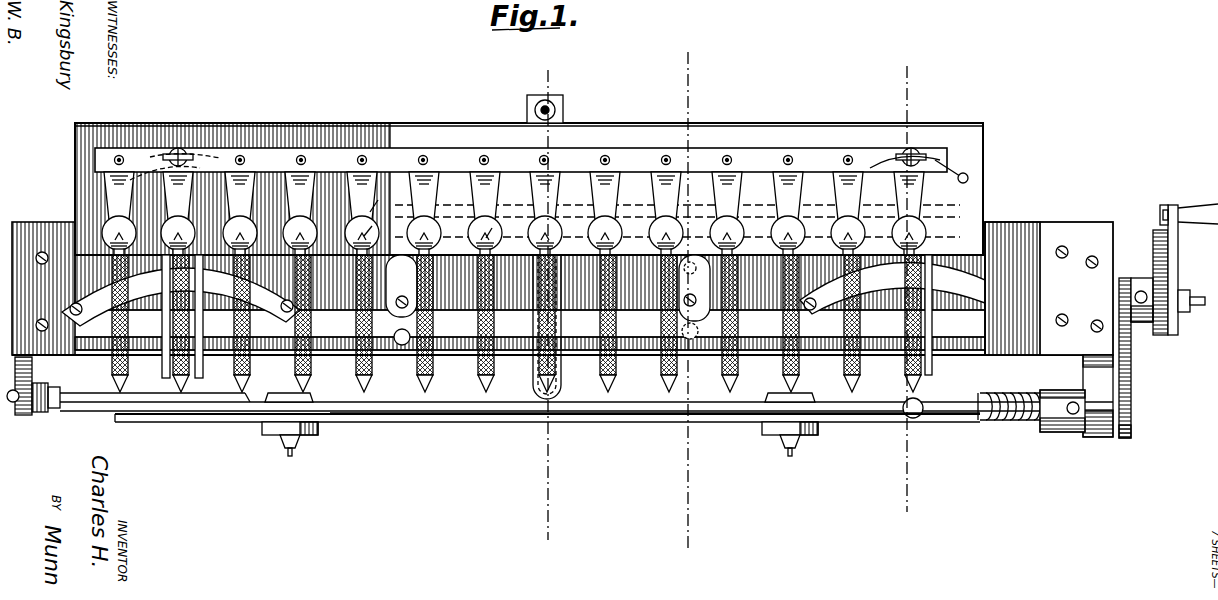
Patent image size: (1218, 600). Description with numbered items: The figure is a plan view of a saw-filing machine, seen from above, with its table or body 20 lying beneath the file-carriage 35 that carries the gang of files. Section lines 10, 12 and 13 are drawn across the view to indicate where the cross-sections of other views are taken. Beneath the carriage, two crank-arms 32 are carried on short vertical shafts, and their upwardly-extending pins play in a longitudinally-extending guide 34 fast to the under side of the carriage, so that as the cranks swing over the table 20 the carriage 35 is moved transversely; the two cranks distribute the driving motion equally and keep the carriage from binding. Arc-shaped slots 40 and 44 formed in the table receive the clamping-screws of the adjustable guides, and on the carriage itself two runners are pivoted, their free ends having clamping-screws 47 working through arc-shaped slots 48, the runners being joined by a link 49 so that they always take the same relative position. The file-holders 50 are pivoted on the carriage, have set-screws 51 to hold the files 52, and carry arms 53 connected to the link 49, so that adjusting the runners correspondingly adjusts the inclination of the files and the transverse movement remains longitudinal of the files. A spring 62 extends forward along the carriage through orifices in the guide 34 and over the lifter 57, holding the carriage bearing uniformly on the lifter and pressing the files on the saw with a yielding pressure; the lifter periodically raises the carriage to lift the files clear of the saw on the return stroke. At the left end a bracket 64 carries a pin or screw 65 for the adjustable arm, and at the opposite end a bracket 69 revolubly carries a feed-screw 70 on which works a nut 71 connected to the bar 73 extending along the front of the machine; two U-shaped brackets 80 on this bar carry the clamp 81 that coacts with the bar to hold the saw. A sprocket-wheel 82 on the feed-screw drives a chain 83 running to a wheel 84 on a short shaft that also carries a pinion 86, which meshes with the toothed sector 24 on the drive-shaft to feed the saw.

The section line 10 10 is at (911, 281).
The section line 12 12 is at (689, 292).
The section line 13 13 is at (553, 296).
The table 20 is at (1028, 238).
The toothed sector 24 is at (1160, 252).
The crank-arm 32 is at (548, 300).
The guide 34 is at (514, 213).
The file-carriage 35 is at (521, 148).
The arc-shaped slot 40 is at (911, 287).
The slot 44 is at (181, 293).
The clamping-screw 47 is at (180, 150).
The arc-shaped slot 48 is at (134, 175).
The link 49 is at (398, 152).
The file-holder 50 is at (368, 230).
The set-screw 51 is at (489, 232).
The file 52 is at (373, 376).
The arm 53 is at (366, 214).
The lifter 57 is at (504, 414).
The spring 62 is at (565, 108).
The bracket 64 is at (37, 412).
The pin or screw 65 is at (95, 382).
The bracket 69 is at (1097, 373).
The feed-screw 70 is at (1008, 422).
The nut 71 is at (1058, 424).
The bar 73 is at (381, 416).
The U-shaped bracket 80 is at (290, 425).
The clamp 81 is at (436, 416).
The sprocket-wheel 82 is at (1132, 430).
The chain 83 is at (1133, 362).
The wheel 84 is at (1122, 282).
The pinion 86 is at (1176, 300).